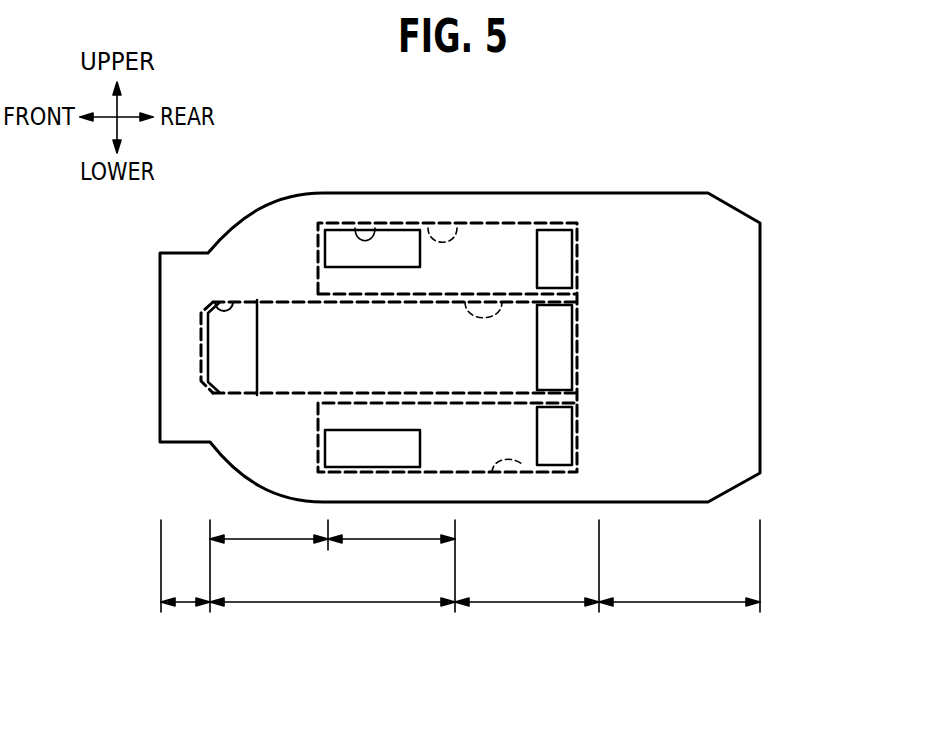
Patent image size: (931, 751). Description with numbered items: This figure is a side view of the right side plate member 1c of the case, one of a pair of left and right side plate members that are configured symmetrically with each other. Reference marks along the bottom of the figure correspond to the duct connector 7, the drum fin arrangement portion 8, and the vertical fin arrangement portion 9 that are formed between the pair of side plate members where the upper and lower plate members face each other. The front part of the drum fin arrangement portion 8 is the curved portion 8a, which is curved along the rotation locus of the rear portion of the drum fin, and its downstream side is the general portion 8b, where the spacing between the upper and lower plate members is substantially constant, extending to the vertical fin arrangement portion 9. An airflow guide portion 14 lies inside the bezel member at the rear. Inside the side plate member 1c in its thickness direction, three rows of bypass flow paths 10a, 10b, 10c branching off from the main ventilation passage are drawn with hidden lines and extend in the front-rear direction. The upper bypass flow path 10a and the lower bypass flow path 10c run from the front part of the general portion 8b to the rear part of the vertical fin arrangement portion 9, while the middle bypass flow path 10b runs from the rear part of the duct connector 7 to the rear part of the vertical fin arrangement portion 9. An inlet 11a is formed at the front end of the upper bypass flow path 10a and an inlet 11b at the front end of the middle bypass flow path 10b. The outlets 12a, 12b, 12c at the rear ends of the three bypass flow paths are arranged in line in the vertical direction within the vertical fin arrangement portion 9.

The side plate member 1c is at (627, 193).
The duct connector 7 is at (185, 605).
The drum fin arrangement portion 8 is at (352, 605).
The curved portion 8a is at (275, 541).
The general portion 8b is at (385, 541).
The vertical fin arrangement portion 9 is at (525, 605).
The airflow guide portion 14 is at (663, 605).
The upper bypass flow path 10a is at (455, 222).
The middle bypass flow path 10b is at (497, 300).
The lower bypass flow path 10c is at (522, 464).
The inlet 11a is at (355, 228).
The inlet 11b is at (214, 303).
The outlet 12a is at (555, 232).
The outlet 12b is at (555, 307).
The outlet 12c is at (566, 418).